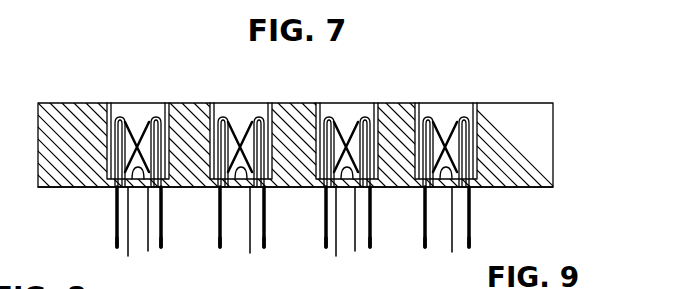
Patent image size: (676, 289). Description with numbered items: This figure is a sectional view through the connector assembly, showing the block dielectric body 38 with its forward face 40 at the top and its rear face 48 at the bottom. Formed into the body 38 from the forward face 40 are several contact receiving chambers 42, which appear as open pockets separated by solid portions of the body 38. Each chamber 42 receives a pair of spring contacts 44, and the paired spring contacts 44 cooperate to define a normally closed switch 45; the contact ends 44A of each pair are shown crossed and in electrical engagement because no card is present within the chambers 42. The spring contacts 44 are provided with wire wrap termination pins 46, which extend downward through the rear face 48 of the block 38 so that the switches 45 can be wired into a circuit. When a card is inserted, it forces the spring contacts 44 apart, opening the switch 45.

The block dielectric body 38 is at (371, 141).
The forward face 40 is at (291, 114).
The contact receiving chamber 42 is at (118, 104).
The spring contact 44 is at (309, 117).
The contact end 44A is at (289, 238).
The normally closed switch 45 is at (291, 104).
The wire wrap termination pin 46 is at (293, 245).
The rear face 48 is at (328, 210).